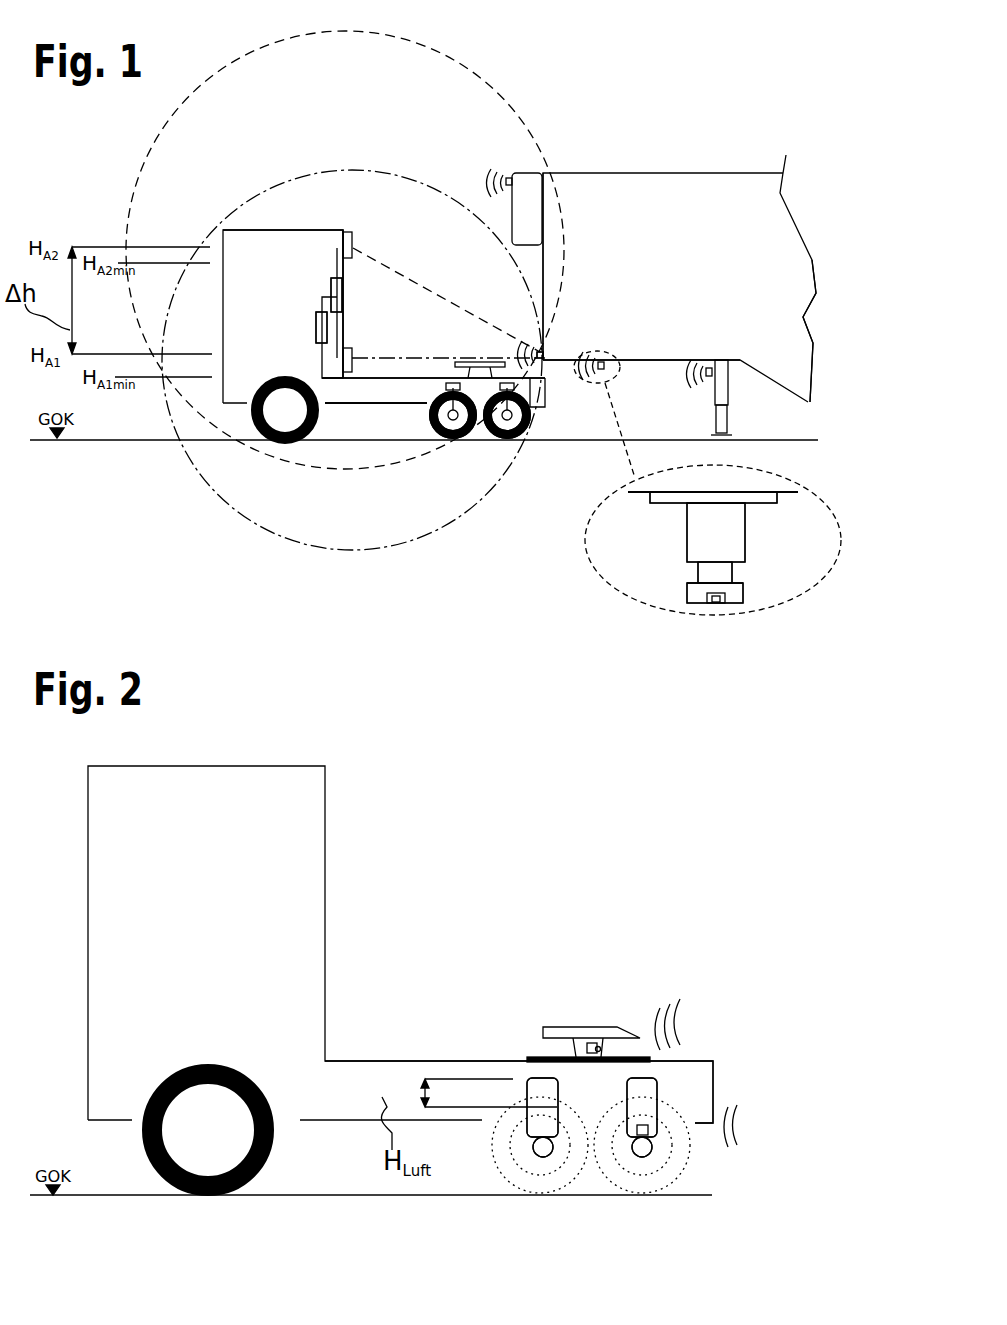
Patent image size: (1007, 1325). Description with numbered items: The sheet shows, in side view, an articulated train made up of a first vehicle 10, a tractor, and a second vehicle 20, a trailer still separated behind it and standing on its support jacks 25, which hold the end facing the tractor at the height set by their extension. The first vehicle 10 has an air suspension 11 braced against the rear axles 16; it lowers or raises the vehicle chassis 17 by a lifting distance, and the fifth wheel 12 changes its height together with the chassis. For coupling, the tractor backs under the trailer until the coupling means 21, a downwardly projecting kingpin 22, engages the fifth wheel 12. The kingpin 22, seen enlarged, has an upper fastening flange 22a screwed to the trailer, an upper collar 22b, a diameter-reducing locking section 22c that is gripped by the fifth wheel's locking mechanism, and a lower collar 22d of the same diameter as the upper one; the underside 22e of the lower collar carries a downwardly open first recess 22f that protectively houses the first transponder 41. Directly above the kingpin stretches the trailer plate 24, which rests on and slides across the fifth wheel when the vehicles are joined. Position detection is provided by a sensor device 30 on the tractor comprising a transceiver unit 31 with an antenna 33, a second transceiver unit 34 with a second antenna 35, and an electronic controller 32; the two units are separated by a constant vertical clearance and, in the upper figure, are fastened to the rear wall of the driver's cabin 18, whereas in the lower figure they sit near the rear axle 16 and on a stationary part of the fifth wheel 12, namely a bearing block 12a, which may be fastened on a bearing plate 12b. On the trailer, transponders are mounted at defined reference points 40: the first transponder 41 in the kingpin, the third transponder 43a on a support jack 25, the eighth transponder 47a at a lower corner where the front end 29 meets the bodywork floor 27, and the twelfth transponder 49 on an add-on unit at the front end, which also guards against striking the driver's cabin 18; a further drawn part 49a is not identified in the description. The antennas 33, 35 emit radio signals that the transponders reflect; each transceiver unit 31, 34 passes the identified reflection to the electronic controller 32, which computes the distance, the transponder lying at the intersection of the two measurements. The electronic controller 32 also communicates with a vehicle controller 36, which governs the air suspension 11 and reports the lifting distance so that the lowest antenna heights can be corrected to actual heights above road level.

In FIG. 1, the first vehicle 10 is at (384, 334).
In FIG. 2, the first vehicle 10 is at (400, 976).
In FIG. 1, the air suspension 11 is at (543, 362).
In FIG. 2, the air suspension 11 is at (533, 1077).
In FIG. 1, the fifth wheel 12 is at (550, 360).
In FIG. 2, the fifth wheel 12 is at (570, 1027).
In FIG. 2, the bearing blocks 12a is at (535, 1078).
In FIG. 2, the bearing plate 12b is at (540, 1078).
In FIG. 1, the rear axles 16 is at (507, 436).
In FIG. 2, the rear axles 16 is at (543, 1157).
In FIG. 1, the vehicle chassis 17 is at (415, 392).
In FIG. 2, the vehicle chassis 17 is at (328, 1088).
In FIG. 1, the driver's cabin 18 is at (331, 292).
In FIG. 1, the second vehicle 20 is at (679, 278).
In FIG. 1, the coupling means 21 is at (622, 530).
In FIG. 1, the kingpin 22 is at (713, 547).
In FIG. 1, the upper fastening flange 22a is at (777, 500).
In FIG. 1, the upper collar 22b is at (745, 545).
In FIG. 1, the locking section 22c is at (698, 570).
In FIG. 1, the lower collar 22d is at (732, 575).
In FIG. 1, the underside of the lower collar 22e is at (727, 603).
In FIG. 1, the first recess 22f is at (705, 603).
In FIG. 1, the trailer plate 24 is at (627, 360).
In FIG. 1, the support jacks 25 is at (729, 418).
In FIG. 1, the bodywork floor 27 is at (812, 345).
In FIG. 1, the front end 29 is at (540, 260).
In FIG. 1, the sensor device 30 is at (301, 244).
In FIG. 1, the transceiver unit 31 is at (355, 380).
In FIG. 2, the transceiver unit 31 is at (645, 1130).
In FIG. 1, the electronic controller 32 is at (352, 285).
In FIG. 1, the antenna 33 is at (368, 380).
In FIG. 2, the antenna 33 is at (653, 1133).
In FIG. 1, the second transceiver unit 34 is at (348, 236).
In FIG. 2, the second transceiver unit 34 is at (595, 1043).
In FIG. 1, the second antenna 35 is at (354, 250).
In FIG. 2, the second antenna 35 is at (637, 1057).
In FIG. 1, the vehicle controller 36 is at (316, 325).
In FIG. 1, the reference points 40 is at (606, 374).
In FIG. 1, the first transponder 41 is at (718, 606).
In FIG. 1, the third transponder 43a is at (710, 377).
In FIG. 1, the eighth transponder 47a is at (543, 357).
In FIG. 1, the twelfth transponder 49 is at (527, 173).
In FIG. 1, the sensor transmitter 49a is at (512, 181).